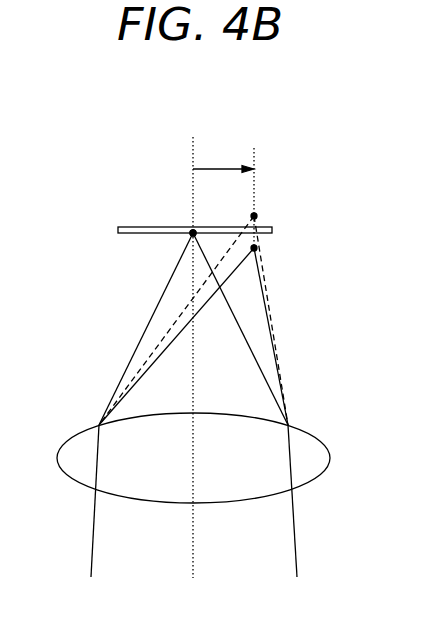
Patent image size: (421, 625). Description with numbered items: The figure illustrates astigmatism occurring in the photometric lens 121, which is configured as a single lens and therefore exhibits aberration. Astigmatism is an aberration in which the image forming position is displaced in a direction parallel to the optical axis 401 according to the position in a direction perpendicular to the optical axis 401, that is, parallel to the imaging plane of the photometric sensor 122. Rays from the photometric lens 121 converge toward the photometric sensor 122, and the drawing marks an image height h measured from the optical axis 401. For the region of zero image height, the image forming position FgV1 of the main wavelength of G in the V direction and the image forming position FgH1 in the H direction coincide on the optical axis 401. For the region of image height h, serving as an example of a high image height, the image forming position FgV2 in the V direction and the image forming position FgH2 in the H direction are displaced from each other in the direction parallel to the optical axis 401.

The optical axis 401 is at (193, 182).
The photometric sensor 122 is at (137, 234).
The photometric lens 121 is at (312, 437).
The image height h is at (223, 193).
The image forming position FgH1 is at (193, 233).
The image forming position FgV1 is at (114, 191).
The image forming position FgH2 is at (254, 216).
The image forming position FgV2 is at (254, 248).